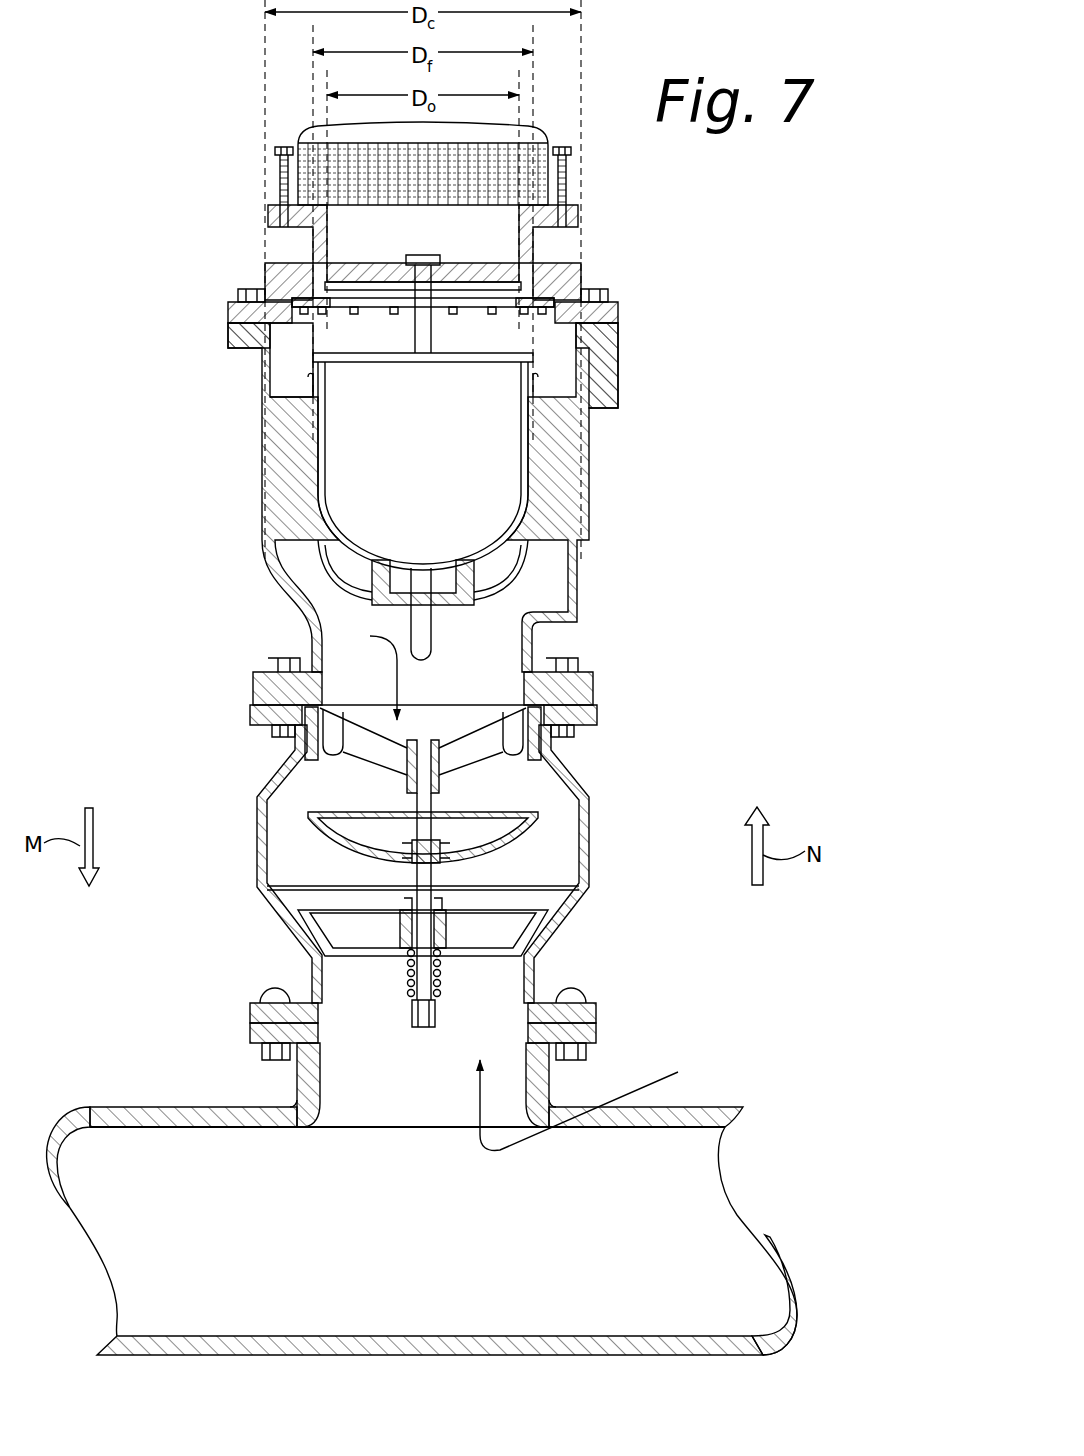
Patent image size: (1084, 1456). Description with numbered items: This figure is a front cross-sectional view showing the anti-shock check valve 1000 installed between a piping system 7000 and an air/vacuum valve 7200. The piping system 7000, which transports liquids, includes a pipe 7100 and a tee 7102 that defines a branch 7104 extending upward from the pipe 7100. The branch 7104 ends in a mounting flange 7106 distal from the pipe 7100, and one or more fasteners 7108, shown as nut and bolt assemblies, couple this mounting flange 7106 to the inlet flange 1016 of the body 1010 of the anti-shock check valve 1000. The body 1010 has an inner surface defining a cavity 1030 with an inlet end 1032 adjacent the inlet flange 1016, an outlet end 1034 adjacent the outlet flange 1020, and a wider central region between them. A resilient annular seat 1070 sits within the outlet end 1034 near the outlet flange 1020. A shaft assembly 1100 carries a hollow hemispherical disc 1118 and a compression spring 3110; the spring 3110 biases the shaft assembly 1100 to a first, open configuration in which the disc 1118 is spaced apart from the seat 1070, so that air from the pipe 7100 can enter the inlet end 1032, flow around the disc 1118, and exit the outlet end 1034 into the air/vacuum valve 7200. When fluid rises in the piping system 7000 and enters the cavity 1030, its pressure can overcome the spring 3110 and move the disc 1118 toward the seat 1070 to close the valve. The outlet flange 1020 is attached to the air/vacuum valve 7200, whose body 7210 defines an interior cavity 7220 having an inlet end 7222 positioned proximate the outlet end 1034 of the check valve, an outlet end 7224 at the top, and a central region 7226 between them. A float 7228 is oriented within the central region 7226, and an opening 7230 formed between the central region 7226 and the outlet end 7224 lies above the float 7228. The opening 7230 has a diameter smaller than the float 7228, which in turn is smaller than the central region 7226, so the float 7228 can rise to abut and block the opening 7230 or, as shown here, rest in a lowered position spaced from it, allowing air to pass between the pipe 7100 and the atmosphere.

The piping system 7000 is at (790, 1058).
The pipe 7100 is at (146, 1088).
The tee 7102 is at (246, 1066).
The branch 7104 is at (312, 1077).
The mounting flange 7106 is at (261, 1034).
The fastener 7108 is at (275, 990).
The anti-shock check valve 1000 is at (630, 843).
The body 1010 is at (245, 812).
The inlet flange 1016 is at (260, 1005).
The outlet flange 1020 is at (263, 718).
The cavity 1030 is at (306, 867).
The inlet end 1032 is at (600, 1103).
The outlet end 1034 is at (370, 636).
The annular seat 1070 is at (455, 725).
The shaft assembly 1100 is at (442, 875).
The disc 1118 is at (306, 834).
The spring 3110 is at (440, 980).
The air/vacuum valve 7200 is at (662, 475).
The body 7210 is at (618, 366).
The interior cavity 7220 is at (490, 637).
The inlet end 7222 is at (470, 690).
The outlet end 7224 is at (462, 237).
The central region 7226 is at (302, 368).
The float 7228 is at (387, 450).
The opening 7230 is at (470, 318).